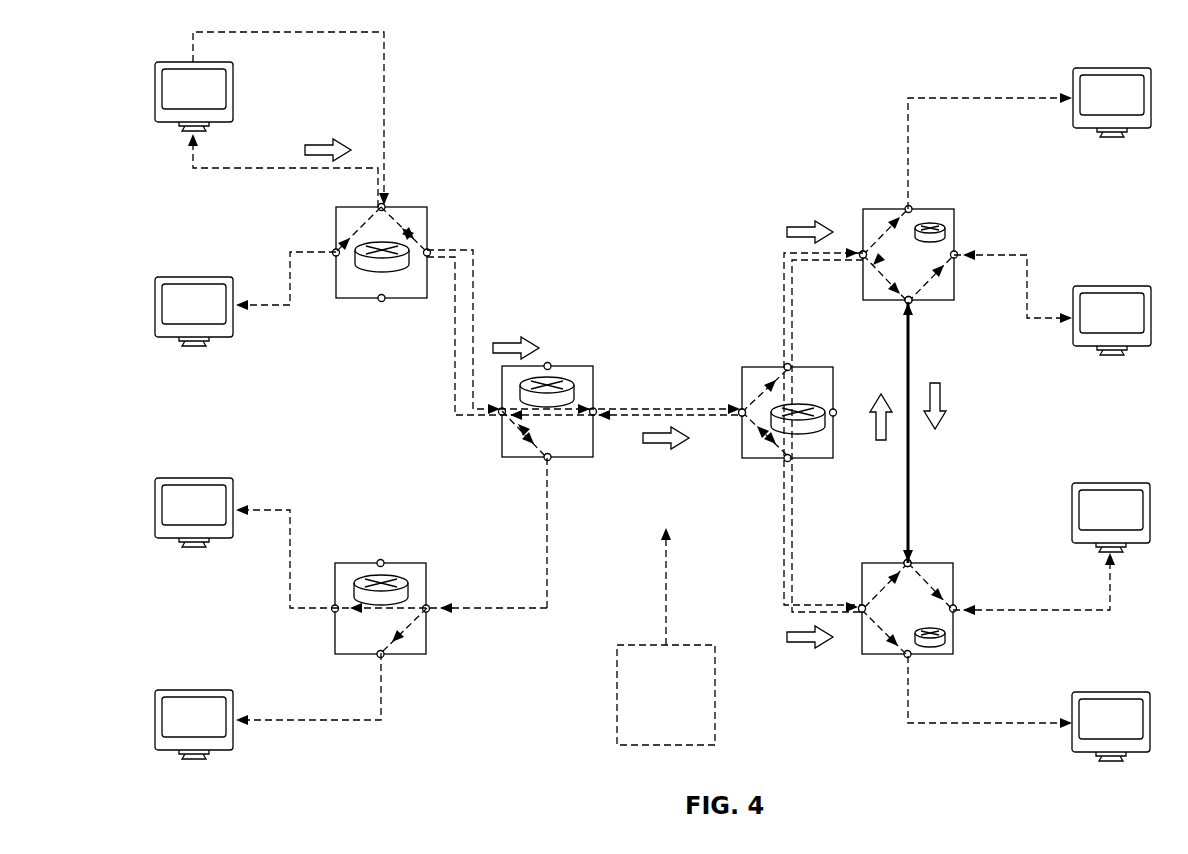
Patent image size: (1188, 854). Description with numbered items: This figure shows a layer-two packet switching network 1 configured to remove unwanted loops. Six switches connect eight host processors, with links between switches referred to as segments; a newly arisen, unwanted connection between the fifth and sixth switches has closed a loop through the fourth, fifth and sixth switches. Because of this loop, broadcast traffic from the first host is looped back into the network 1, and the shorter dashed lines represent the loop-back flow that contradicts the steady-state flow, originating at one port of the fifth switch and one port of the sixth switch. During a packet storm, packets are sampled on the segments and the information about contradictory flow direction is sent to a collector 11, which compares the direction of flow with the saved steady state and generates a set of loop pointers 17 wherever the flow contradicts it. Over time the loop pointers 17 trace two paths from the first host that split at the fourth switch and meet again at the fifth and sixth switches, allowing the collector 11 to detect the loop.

The L2 digital packet switching network 1 is at (530, 176).
The collector 11 is at (615, 697).
The loop pointers 17 is at (318, 143).